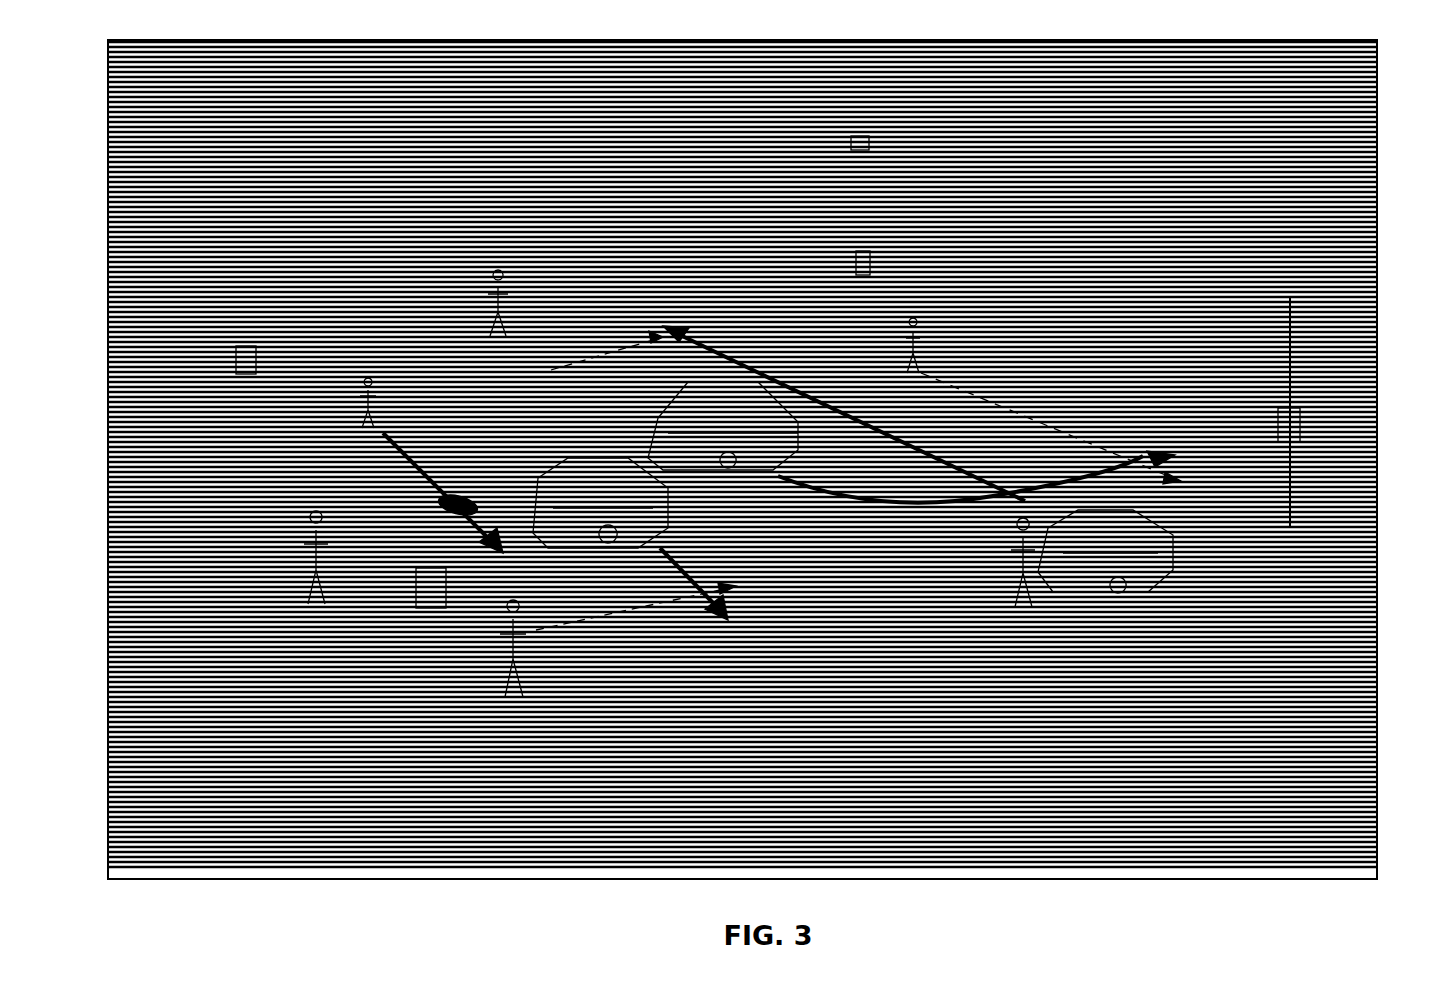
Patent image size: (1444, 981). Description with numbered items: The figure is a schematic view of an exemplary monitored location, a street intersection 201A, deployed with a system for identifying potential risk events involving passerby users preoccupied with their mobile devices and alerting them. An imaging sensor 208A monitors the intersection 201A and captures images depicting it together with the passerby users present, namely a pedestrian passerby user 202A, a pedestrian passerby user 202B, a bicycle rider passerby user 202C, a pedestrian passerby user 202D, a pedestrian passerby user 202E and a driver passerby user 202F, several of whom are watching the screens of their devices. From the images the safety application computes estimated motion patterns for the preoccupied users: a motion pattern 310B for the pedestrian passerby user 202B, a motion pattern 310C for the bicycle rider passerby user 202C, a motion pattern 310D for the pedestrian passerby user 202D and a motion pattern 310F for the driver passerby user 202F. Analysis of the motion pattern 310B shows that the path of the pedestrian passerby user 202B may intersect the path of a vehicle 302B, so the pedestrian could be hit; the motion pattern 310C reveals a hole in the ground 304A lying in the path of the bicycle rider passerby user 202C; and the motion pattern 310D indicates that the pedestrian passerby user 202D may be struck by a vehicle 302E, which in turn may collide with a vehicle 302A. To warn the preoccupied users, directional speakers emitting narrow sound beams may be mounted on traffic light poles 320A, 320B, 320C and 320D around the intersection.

The street intersection 201A is at (1371, 70).
The imaging sensor 208A is at (852, 128).
The pedestrian passerby user 202A is at (279, 559).
The pedestrian passerby user 202B is at (477, 648).
The bicycle rider passerby user 202C is at (362, 422).
The pedestrian passerby user 202D is at (498, 324).
The pedestrian passerby user 202E is at (952, 345).
The driver passerby user 202F is at (1070, 582).
The vehicle 302A is at (706, 422).
The vehicle 302B is at (600, 484).
The vehicle 302E is at (1125, 551).
The hole in the ground 304A is at (420, 490).
The motion pattern 310B is at (636, 589).
The motion pattern 310C is at (443, 493).
The motion pattern 310D is at (788, 412).
The motion pattern 310F is at (979, 438).
The traffic light pole 320A is at (413, 566).
The traffic light pole 320B is at (239, 341).
The traffic light pole 320C is at (861, 245).
The traffic light pole 320D is at (1311, 413).